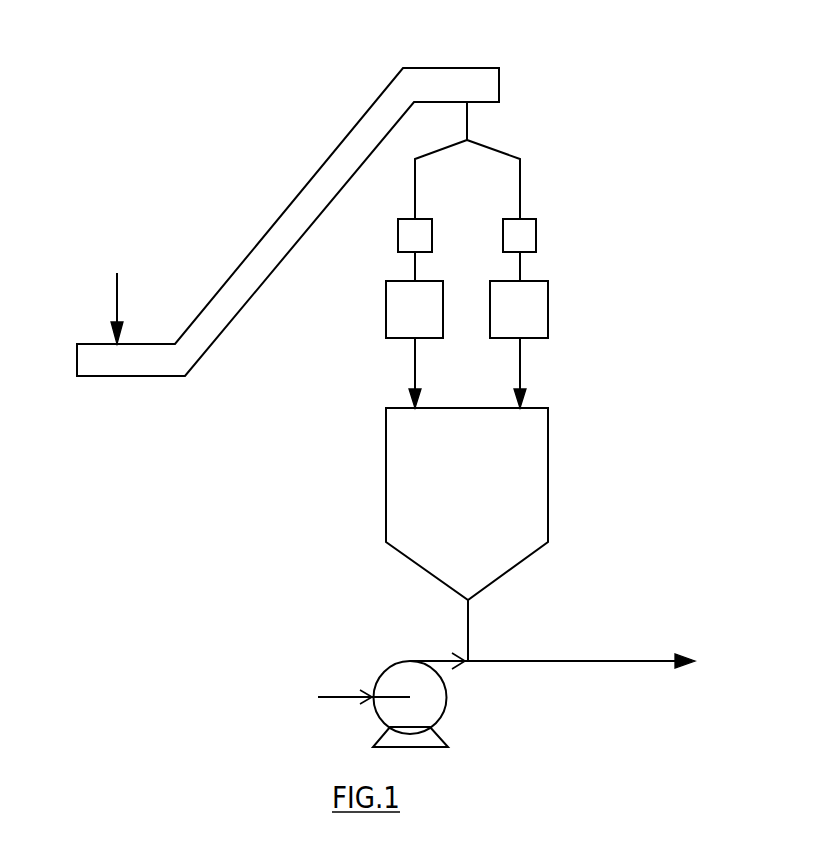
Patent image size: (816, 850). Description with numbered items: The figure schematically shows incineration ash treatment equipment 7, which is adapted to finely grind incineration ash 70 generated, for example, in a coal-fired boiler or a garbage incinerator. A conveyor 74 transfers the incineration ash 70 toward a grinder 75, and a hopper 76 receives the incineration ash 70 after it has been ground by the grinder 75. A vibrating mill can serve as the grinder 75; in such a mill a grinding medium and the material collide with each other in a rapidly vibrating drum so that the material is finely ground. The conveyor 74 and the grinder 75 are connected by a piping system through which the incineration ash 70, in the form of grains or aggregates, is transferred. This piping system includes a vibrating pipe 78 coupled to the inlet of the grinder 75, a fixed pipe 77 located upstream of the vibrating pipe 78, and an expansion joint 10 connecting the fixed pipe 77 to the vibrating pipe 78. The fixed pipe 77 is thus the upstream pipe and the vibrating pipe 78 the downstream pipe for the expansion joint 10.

The incineration ash treatment equipment 7 is at (125, 92).
The conveyor 74 is at (263, 237).
The incineration ash 70 is at (117, 280).
The fixed pipe 77 is at (414, 180).
The expansion joint 10 is at (398, 240).
The vibrating pipe 78 is at (415, 267).
The grinder 75 is at (385, 325).
The hopper 76 is at (481, 507).